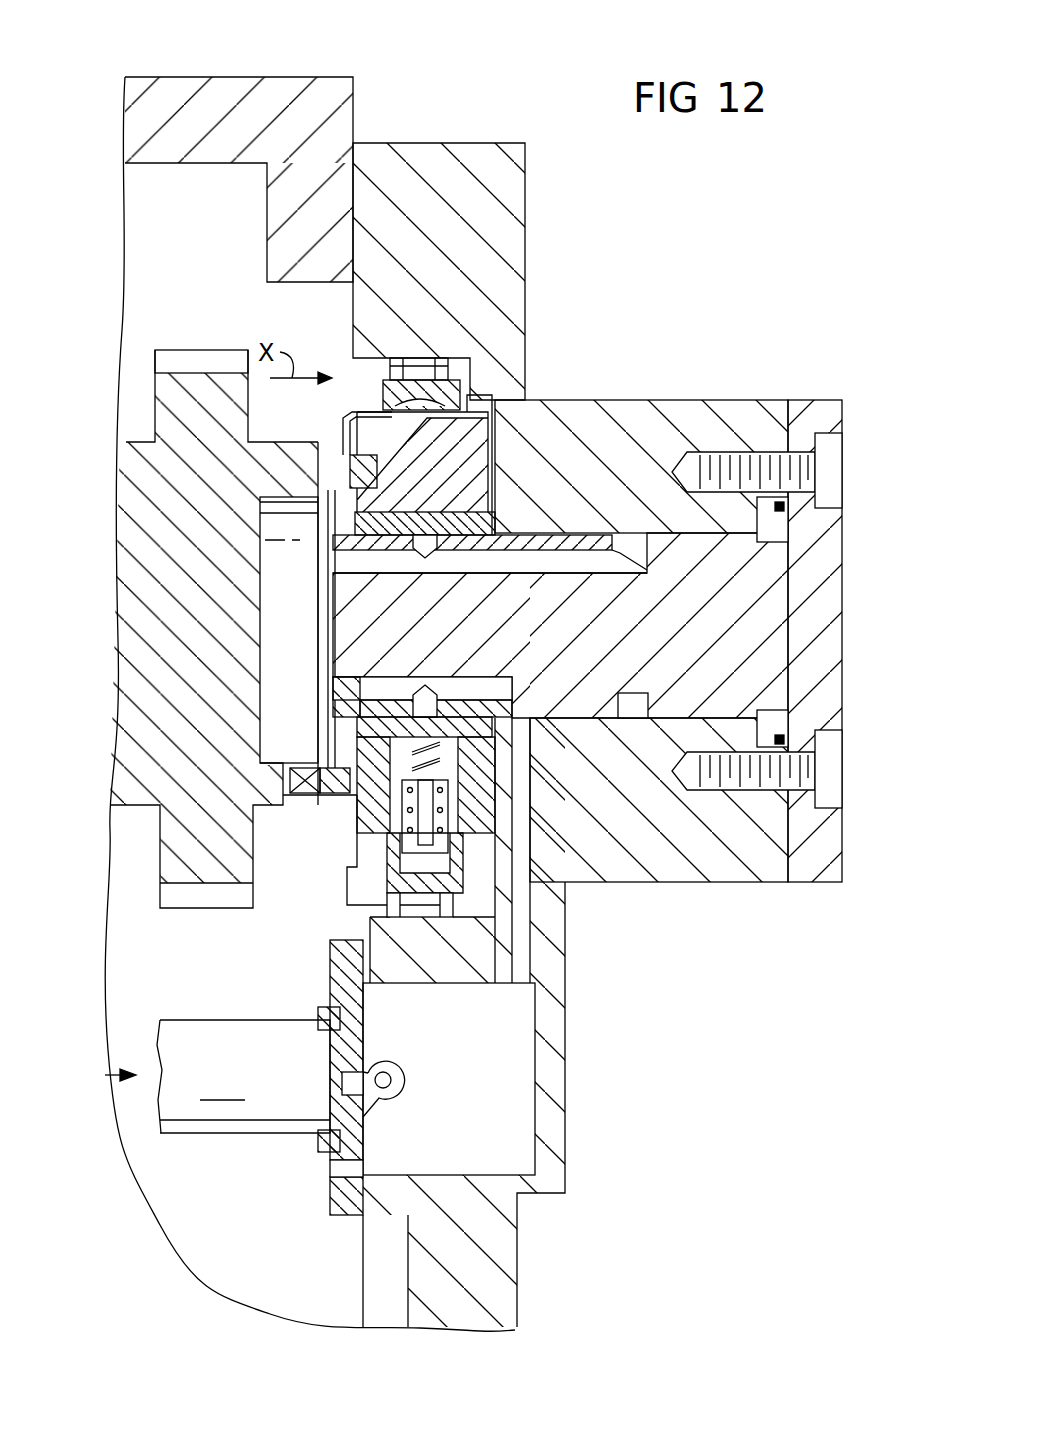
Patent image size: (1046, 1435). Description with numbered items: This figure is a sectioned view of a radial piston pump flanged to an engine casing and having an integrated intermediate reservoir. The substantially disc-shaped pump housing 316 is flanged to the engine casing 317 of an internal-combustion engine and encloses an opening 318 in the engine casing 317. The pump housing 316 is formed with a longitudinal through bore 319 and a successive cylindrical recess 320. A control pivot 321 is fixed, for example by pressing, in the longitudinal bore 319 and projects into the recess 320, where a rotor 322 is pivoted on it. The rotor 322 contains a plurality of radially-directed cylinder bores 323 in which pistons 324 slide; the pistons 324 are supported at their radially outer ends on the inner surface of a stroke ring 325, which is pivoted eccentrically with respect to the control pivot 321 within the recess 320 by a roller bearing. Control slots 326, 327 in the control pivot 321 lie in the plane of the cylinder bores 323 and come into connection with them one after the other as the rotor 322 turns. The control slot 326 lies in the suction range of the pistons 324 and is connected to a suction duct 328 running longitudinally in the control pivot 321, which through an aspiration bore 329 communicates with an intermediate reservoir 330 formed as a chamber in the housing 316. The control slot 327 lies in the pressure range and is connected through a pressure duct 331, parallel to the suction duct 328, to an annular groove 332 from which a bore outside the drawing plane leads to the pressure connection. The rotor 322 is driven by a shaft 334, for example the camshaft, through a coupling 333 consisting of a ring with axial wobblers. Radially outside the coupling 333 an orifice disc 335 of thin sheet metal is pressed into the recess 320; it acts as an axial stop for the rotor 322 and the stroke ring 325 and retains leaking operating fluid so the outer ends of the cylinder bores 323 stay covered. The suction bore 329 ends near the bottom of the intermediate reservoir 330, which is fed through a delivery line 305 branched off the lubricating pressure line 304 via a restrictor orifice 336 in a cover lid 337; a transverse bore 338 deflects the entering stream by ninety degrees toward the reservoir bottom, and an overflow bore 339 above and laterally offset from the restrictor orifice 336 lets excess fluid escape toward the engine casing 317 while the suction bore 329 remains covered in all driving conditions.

The lubricating pressure line 304 is at (102, 1080).
The delivery line 305 is at (222, 1118).
The pump housing 316 is at (518, 190).
The engine casing 317 is at (287, 88).
The opening 318 is at (270, 283).
The longitudinal through bore 319 is at (750, 545).
The cylindrical recess 320 is at (488, 402).
The control pivot 321 is at (763, 655).
The rotor 322 is at (497, 453).
The cylinder bores 323 is at (400, 758).
The pistons 324 is at (405, 865).
The stroke ring 325 is at (395, 403).
The control slot 326 is at (417, 707).
The control slot 327 is at (425, 535).
The suction duct 328 is at (373, 683).
The aspiration bore 329 is at (532, 930).
The intermediate reservoir 330 is at (507, 1080).
The pressure duct 331 is at (373, 565).
The annular groove 332 is at (632, 533).
The coupling 333 is at (343, 440).
The shaft 334 is at (137, 478).
The orifice disc 335 is at (377, 903).
The restrictor orifice 336 is at (360, 1057).
The cover lid 337 is at (345, 1207).
The transverse bore 338 is at (390, 1082).
The overflow bore 339 is at (330, 1167).